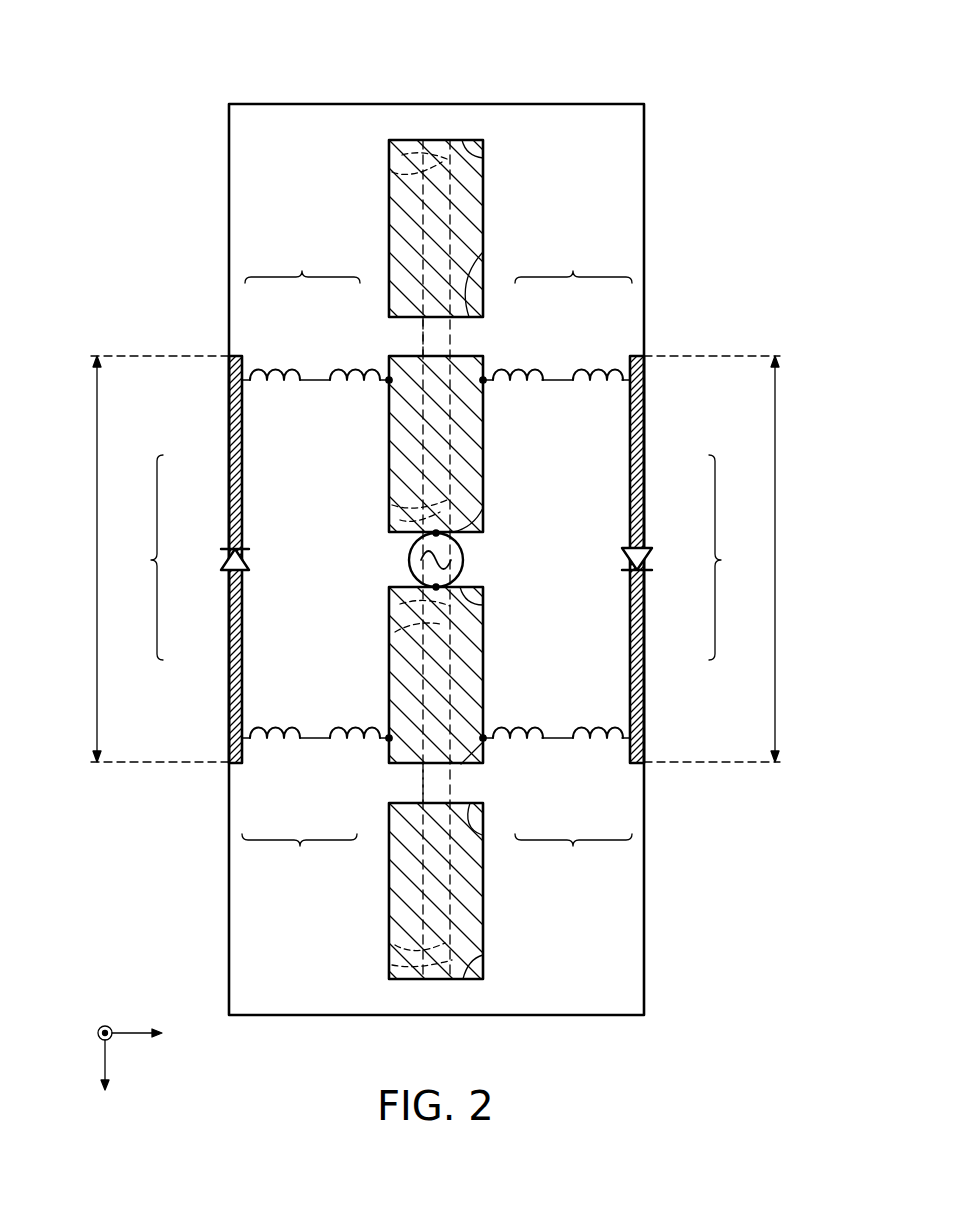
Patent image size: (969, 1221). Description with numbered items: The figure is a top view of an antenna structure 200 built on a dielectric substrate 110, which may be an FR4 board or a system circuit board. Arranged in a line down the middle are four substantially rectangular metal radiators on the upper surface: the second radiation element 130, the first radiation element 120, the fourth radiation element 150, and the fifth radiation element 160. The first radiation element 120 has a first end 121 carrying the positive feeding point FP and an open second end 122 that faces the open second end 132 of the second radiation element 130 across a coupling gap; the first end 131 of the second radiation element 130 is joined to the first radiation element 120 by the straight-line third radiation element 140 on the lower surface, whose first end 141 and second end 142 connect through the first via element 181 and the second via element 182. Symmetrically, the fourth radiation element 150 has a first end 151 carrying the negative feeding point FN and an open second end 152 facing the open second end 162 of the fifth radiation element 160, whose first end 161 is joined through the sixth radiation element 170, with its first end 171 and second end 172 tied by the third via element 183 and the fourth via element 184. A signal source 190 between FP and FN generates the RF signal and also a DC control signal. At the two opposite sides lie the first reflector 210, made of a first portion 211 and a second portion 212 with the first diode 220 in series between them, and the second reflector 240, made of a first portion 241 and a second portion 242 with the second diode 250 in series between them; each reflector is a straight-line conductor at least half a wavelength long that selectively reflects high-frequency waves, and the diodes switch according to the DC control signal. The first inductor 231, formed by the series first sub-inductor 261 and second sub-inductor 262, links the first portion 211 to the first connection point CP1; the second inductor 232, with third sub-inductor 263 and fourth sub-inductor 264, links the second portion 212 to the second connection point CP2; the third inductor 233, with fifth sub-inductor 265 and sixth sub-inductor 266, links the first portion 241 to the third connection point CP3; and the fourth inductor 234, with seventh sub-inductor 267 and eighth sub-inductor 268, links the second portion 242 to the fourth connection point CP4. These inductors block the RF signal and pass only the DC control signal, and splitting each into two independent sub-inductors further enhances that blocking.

The antenna structure 200 is at (163, 33).
The dielectric substrate 110 is at (591, 117).
The first radiation element 120 is at (476, 443).
The first end of first radiation element 121 is at (465, 530).
The second end of first radiation element 122 is at (463, 357).
The second radiation element 130 is at (476, 210).
The first end of second radiation element 131 is at (485, 152).
The second end of second radiation element 132 is at (470, 300).
The third radiation element 140 is at (436, 337).
The first end of third radiation element 141 is at (402, 500).
The second end of third radiation element 142 is at (392, 172).
The fourth radiation element 150 is at (476, 673).
The first end of fourth radiation element 151 is at (478, 601).
The second end of fourth radiation element 152 is at (462, 765).
The fifth radiation element 160 is at (476, 901).
The first end of fifth radiation element 161 is at (468, 976).
The second end of fifth radiation element 162 is at (470, 807).
The sixth radiation element 170 is at (436, 785).
The first end of sixth radiation element 171 is at (397, 632).
The second end of sixth radiation element 172 is at (400, 947).
The first via element 181 is at (400, 522).
The second via element 182 is at (402, 155).
The third via element 183 is at (402, 605).
The fourth via element 184 is at (400, 965).
The signal source 190 is at (463, 557).
The positive feeding point FP is at (412, 536).
The negative feeding point FN is at (417, 586).
The first reflector 210 is at (173, 559).
The first portion of first reflector 211 is at (234, 475).
The second portion of first reflector 212 is at (234, 645).
The first diode 220 is at (248, 562).
The first inductor 231 is at (302, 263).
The second inductor 232 is at (299, 858).
The third inductor 233 is at (573, 263).
The fourth inductor 234 is at (573, 858).
The second reflector 240 is at (697, 559).
The first portion of second reflector 241 is at (640, 468).
The second portion of second reflector 242 is at (640, 638).
The second diode 250 is at (630, 564).
The first sub-inductor 261 is at (271, 367).
The second sub-inductor 262 is at (355, 370).
The third sub-inductor 263 is at (270, 748).
The fourth sub-inductor 264 is at (355, 748).
The fifth sub-inductor 265 is at (601, 370).
The sixth sub-inductor 266 is at (525, 370).
The seventh sub-inductor 267 is at (601, 748).
The eighth sub-inductor 268 is at (520, 748).
The first connection point CP1 is at (388, 383).
The second connection point CP2 is at (387, 734).
The third connection point CP3 is at (486, 383).
The fourth connection point CP4 is at (486, 736).